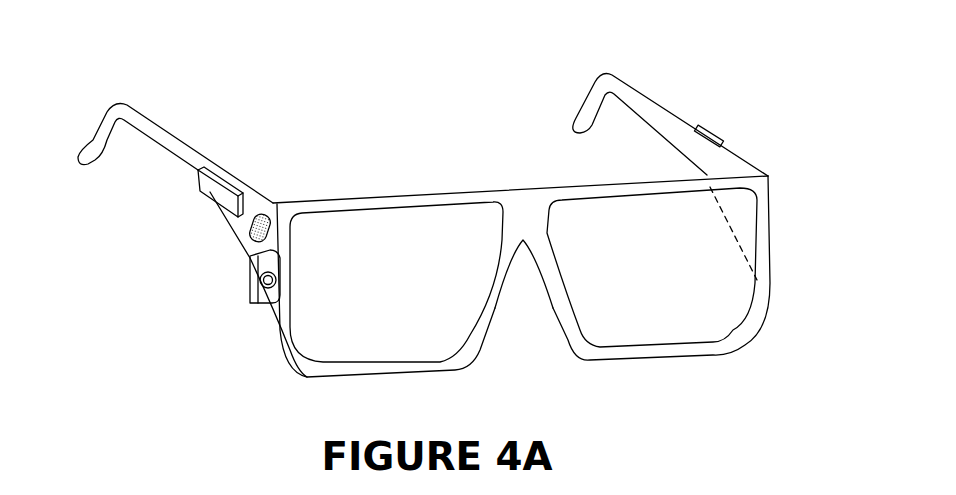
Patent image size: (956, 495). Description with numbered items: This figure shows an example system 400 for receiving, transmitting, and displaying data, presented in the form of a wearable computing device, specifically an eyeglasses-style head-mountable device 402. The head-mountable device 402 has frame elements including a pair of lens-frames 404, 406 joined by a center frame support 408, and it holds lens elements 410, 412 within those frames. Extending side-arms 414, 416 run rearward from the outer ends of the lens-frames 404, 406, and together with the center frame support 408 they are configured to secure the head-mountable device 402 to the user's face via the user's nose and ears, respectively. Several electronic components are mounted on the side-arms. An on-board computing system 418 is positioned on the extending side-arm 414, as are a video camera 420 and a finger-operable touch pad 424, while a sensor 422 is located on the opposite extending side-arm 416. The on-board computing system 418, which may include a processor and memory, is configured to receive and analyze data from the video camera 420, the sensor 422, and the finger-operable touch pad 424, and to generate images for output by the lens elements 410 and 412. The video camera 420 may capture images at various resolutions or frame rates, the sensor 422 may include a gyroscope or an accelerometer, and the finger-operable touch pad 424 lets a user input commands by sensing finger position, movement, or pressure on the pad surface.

The system 400 is at (779, 337).
The head-mountable device 402 is at (378, 108).
The lens-frame 404 is at (367, 202).
The lens-frame 406 is at (590, 185).
The center frame support 408 is at (522, 210).
The lens element 410 is at (340, 343).
The lens element 412 is at (668, 328).
The extending side-arm 414 is at (217, 167).
The extending side-arm 416 is at (673, 112).
The on-board computing system 418 is at (213, 190).
The video camera 420 is at (252, 268).
The sensor 422 is at (713, 133).
The finger-operable touch pad 424 is at (248, 230).